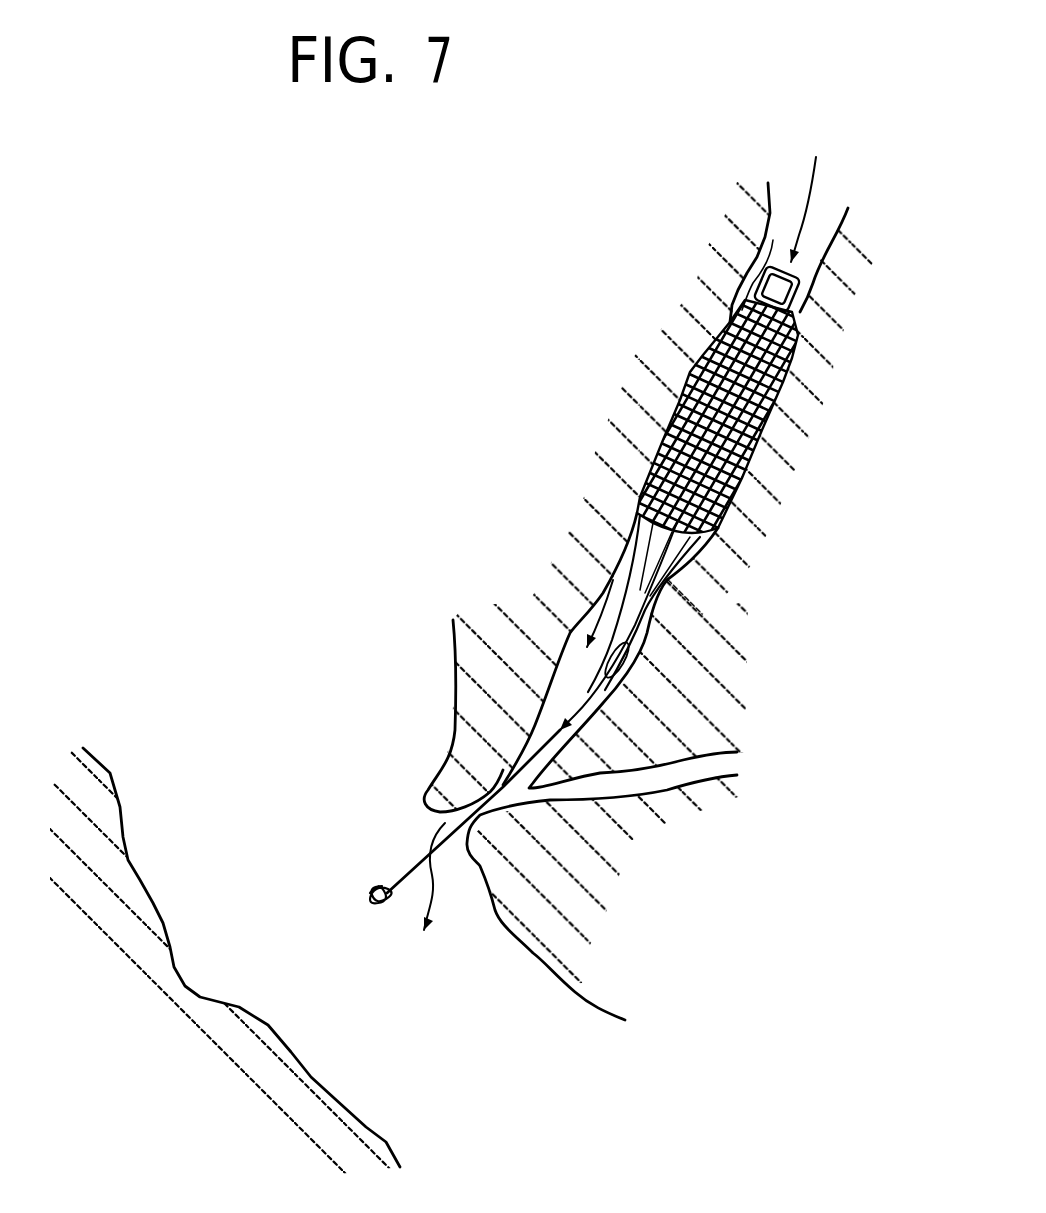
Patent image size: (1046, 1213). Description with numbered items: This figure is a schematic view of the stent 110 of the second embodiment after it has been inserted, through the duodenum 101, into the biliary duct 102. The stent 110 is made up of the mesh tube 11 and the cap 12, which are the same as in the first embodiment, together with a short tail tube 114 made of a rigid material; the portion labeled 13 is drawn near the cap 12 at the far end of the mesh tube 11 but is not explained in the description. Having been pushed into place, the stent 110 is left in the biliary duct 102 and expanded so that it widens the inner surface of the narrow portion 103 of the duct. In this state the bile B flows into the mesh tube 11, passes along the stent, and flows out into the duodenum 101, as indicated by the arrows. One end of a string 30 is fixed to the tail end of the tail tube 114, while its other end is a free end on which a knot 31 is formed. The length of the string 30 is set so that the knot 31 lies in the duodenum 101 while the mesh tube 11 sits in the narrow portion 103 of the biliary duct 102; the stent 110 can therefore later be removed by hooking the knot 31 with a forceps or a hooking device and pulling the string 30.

The mesh tube 11 is at (697, 367).
The cap 12 is at (753, 280).
The connecting wire 13 is at (797, 307).
The string 30 is at (507, 783).
The knot 31 is at (380, 903).
The duodenum 101 is at (517, 1000).
The biliary duct 102 is at (768, 213).
The narrow portion 103 is at (650, 430).
The stent 110 is at (613, 600).
The tail tube 114 is at (650, 587).
The bile B is at (810, 188).